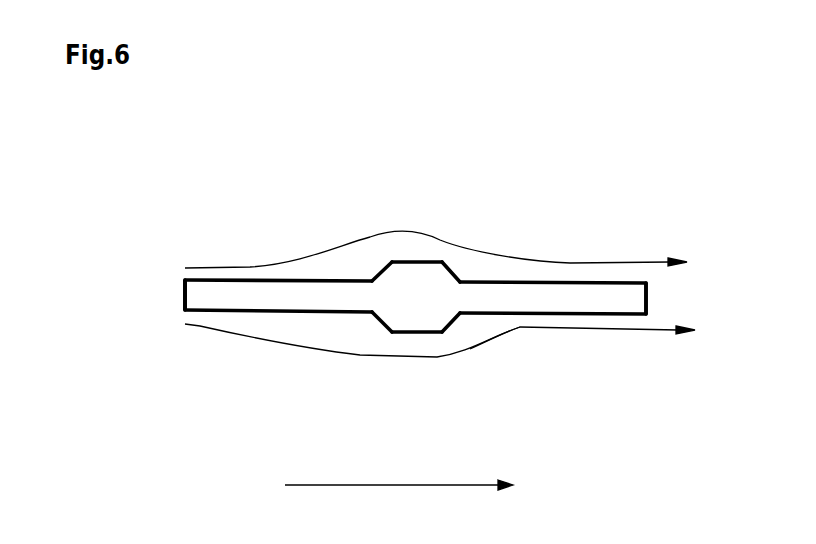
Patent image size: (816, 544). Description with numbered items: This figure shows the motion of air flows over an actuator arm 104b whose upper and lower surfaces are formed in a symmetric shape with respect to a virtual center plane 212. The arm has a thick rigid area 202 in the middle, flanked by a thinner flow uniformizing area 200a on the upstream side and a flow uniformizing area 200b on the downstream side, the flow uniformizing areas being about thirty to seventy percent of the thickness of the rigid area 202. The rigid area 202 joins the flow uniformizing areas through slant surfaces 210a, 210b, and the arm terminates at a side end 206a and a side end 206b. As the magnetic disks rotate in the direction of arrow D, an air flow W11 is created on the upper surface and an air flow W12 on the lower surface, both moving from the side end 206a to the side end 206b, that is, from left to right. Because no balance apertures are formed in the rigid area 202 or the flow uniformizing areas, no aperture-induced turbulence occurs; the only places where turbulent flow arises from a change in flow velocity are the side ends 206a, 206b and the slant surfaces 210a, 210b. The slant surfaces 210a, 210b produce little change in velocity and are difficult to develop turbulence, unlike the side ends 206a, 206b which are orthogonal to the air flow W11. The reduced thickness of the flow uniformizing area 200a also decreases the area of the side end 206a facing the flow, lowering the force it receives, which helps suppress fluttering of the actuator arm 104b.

The virtual center plane 212 is at (173, 290).
The side end 206a is at (185, 300).
The flow uniformizing area 200a is at (278, 280).
The slant surface 210a is at (377, 272).
The rigid area 202 is at (428, 262).
The slant surface 210b is at (455, 277).
The flow uniformizing area 200b is at (575, 280).
The side end 206b is at (648, 297).
The air flow W11 is at (363, 238).
The air flow W12 is at (285, 344).
The actuator arm 104b is at (518, 350).
The direction of rotation arrow D is at (399, 461).